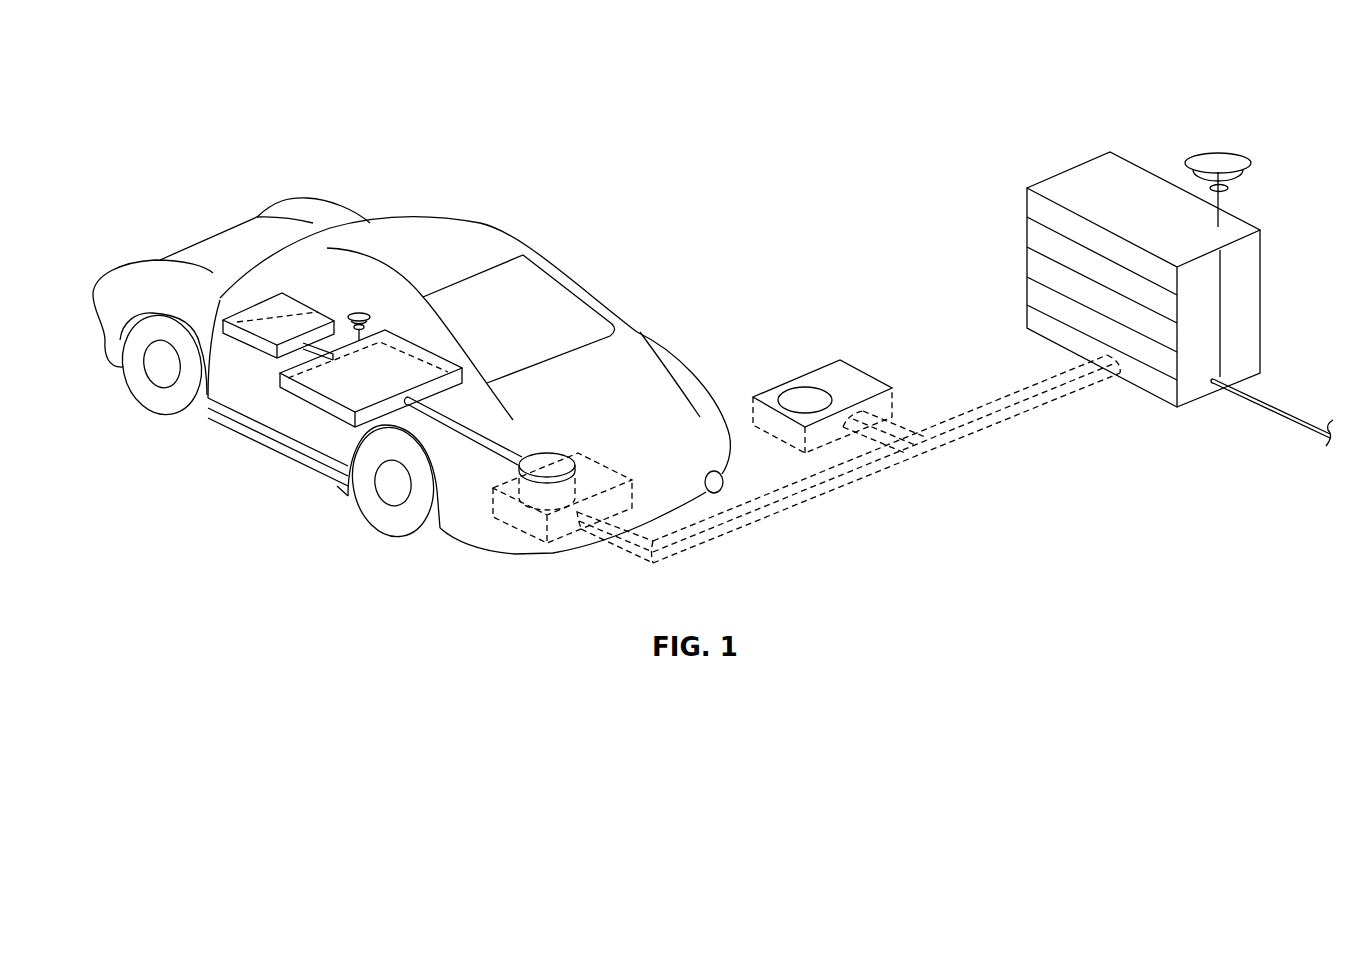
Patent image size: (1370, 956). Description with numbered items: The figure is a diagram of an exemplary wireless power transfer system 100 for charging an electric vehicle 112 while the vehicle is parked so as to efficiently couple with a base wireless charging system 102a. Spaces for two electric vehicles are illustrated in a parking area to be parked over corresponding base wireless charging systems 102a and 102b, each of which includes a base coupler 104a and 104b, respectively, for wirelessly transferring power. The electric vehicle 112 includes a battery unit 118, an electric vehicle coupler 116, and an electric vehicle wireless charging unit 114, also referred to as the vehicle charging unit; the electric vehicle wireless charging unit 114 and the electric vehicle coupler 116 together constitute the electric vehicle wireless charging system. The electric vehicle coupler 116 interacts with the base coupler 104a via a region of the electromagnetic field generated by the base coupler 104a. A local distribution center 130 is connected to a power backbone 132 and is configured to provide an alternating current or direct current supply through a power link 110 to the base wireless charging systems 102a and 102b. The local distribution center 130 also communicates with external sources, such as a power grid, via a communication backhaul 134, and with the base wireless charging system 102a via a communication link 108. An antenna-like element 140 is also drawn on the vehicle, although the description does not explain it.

The wireless power transfer system 100 is at (396, 78).
The electric vehicle 112 is at (207, 242).
The battery unit 118 is at (243, 307).
The electric vehicle wireless charging unit 114 is at (280, 372).
The vehicle antenna 140 is at (357, 313).
The electric vehicle coupler 116 is at (540, 453).
The base coupler 104a is at (604, 460).
The base wireless charging system 102a is at (497, 492).
The base wireless charging system 102b is at (815, 370).
The base coupler 104b is at (827, 390).
The communication link 108 is at (1013, 390).
The power link 110 is at (1007, 428).
The local distribution center 130 is at (1058, 172).
The communication backhaul 134 is at (1218, 148).
The power backbone 132 is at (1267, 415).